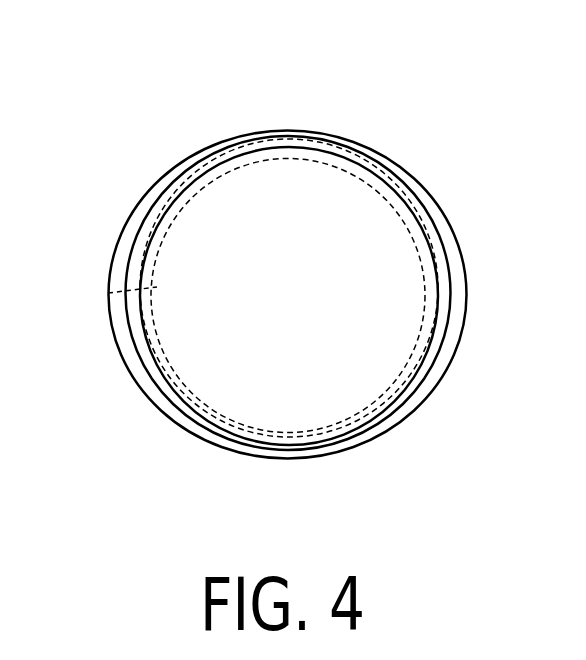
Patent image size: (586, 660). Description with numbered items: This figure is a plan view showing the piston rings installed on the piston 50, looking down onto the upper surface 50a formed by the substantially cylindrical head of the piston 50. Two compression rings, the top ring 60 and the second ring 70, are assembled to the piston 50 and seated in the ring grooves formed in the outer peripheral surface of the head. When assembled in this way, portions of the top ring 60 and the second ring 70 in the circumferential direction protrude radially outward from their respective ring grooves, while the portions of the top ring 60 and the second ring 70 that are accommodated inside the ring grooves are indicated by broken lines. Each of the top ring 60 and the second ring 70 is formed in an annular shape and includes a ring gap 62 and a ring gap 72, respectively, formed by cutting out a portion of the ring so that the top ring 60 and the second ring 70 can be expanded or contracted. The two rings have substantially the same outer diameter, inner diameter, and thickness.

The piston 50 is at (290, 147).
The upper surface 50a is at (372, 378).
The top ring 60 is at (160, 178).
The ring gap 62 is at (420, 291).
The second ring 70 is at (428, 190).
The ring gap 72 is at (108, 293).